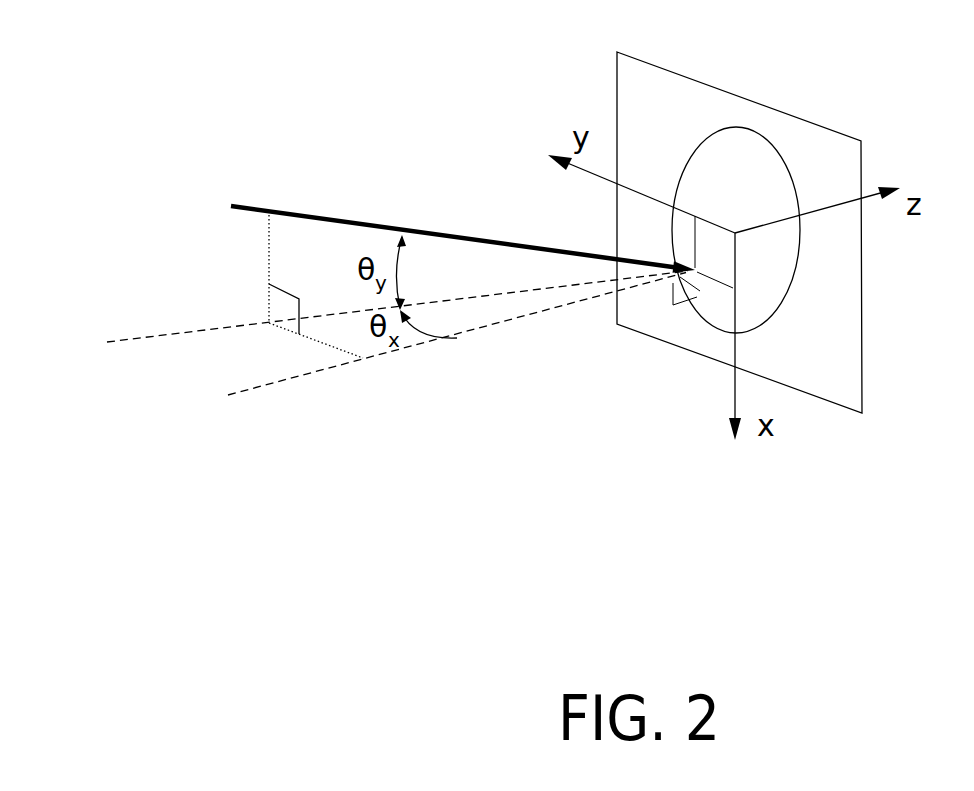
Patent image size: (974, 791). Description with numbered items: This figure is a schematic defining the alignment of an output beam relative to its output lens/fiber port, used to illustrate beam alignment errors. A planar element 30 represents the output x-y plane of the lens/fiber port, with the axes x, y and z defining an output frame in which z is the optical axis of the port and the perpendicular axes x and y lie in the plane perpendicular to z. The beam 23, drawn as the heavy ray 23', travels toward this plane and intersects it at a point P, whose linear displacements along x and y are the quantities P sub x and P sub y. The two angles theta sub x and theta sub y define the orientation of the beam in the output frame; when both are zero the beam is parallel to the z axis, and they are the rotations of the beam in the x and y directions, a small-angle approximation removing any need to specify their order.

The detector plane 30 is at (724, 82).
The reflected light ray 23 is at (463, 219).
The reflected light ray 23' is at (463, 219).
The beam incidence point P is at (723, 246).